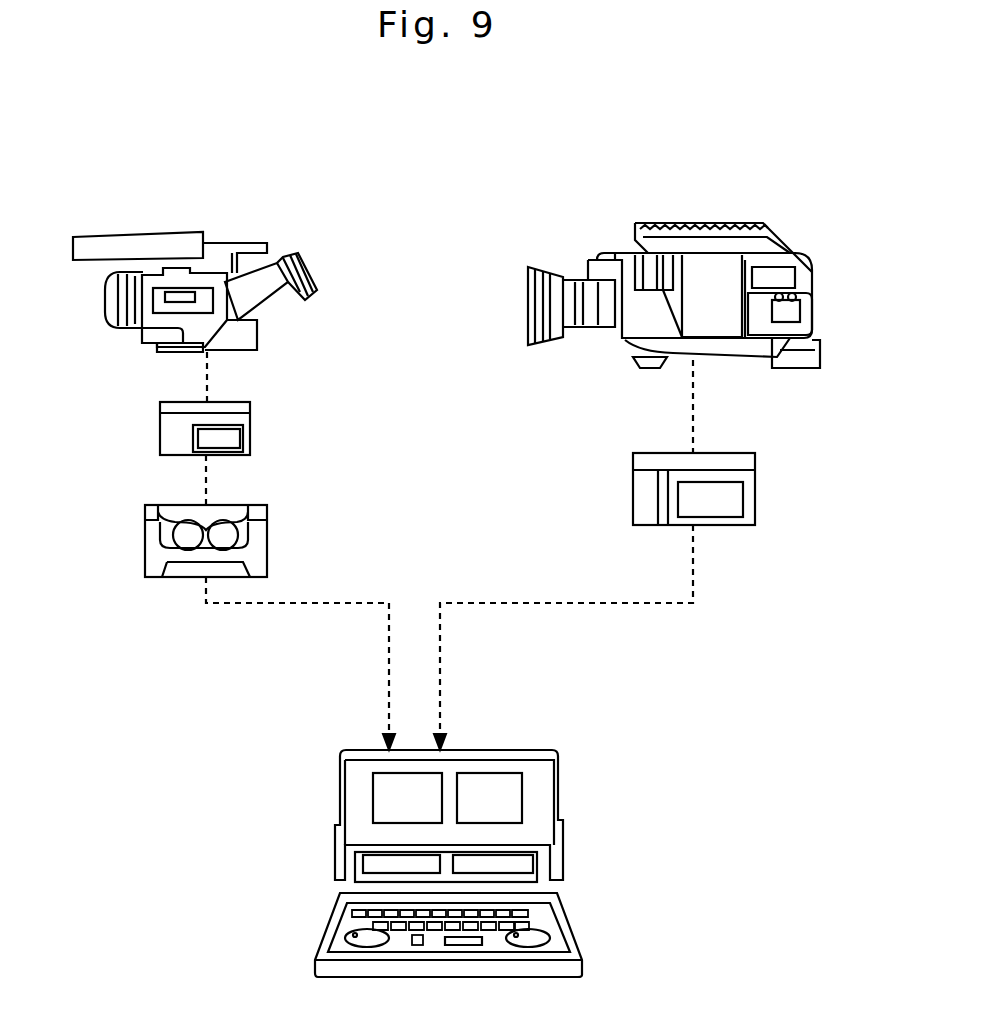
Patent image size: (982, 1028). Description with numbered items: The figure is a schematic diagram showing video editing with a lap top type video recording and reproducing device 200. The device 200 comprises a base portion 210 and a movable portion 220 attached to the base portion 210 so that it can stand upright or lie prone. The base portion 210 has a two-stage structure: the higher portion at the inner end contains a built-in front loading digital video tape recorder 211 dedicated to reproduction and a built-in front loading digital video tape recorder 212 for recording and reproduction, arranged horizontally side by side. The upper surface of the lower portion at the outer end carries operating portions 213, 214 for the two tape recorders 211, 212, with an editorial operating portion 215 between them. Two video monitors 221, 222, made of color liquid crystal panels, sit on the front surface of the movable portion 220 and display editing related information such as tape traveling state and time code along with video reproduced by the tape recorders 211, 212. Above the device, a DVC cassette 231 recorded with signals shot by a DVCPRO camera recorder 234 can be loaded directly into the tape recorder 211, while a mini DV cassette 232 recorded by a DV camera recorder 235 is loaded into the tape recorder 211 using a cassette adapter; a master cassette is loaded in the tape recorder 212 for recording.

The lap top type video recording and reproducing device 200 is at (481, 889).
The base portion 210 is at (431, 940).
The digital video tape recorder 211 is at (373, 863).
The digital video tape recorder 212 is at (515, 864).
The operating portion 213 is at (372, 945).
The operating portion 214 is at (525, 945).
The editorial operating portion 215 is at (448, 945).
The movable portion 220 is at (438, 815).
The video monitor 221 is at (388, 800).
The video monitor 222 is at (507, 790).
The DVC cassette 231 is at (755, 492).
The mini DV cassette 232 is at (160, 430).
The DVCPRO camera recorder 234 is at (813, 270).
The DV camera recorder 235 is at (268, 315).